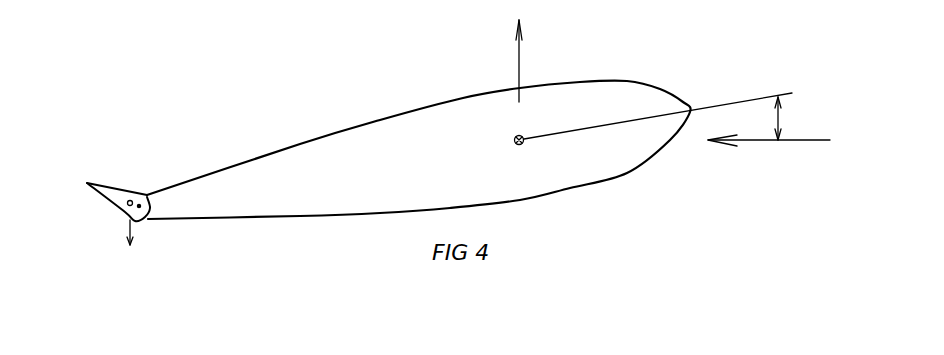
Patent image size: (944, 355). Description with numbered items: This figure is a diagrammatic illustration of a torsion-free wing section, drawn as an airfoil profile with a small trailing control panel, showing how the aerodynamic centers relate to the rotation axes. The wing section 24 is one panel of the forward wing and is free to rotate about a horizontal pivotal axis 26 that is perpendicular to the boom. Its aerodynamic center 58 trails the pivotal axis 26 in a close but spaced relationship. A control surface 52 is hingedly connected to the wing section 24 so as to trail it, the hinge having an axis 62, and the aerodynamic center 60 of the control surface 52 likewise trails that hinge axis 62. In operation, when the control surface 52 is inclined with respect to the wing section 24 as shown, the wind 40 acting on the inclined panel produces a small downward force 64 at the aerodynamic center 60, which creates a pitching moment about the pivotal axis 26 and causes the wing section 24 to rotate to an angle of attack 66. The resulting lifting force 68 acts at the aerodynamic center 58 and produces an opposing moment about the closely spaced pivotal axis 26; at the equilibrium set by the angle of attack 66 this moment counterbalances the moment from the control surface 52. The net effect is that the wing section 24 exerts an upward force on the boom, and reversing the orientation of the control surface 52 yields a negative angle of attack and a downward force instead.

The wing section 24 is at (372, 188).
The pivotal axis 26 is at (524, 137).
The wind 40 is at (754, 143).
The control surface 52 is at (110, 199).
The aerodynamic center of the wing section 58 is at (515, 137).
The aerodynamic center of the control surface 60 is at (130, 200).
The hinge axis 62 is at (140, 203).
The downward force 64 is at (132, 230).
The angle of attack 66 is at (782, 116).
The lifting force 68 is at (519, 62).